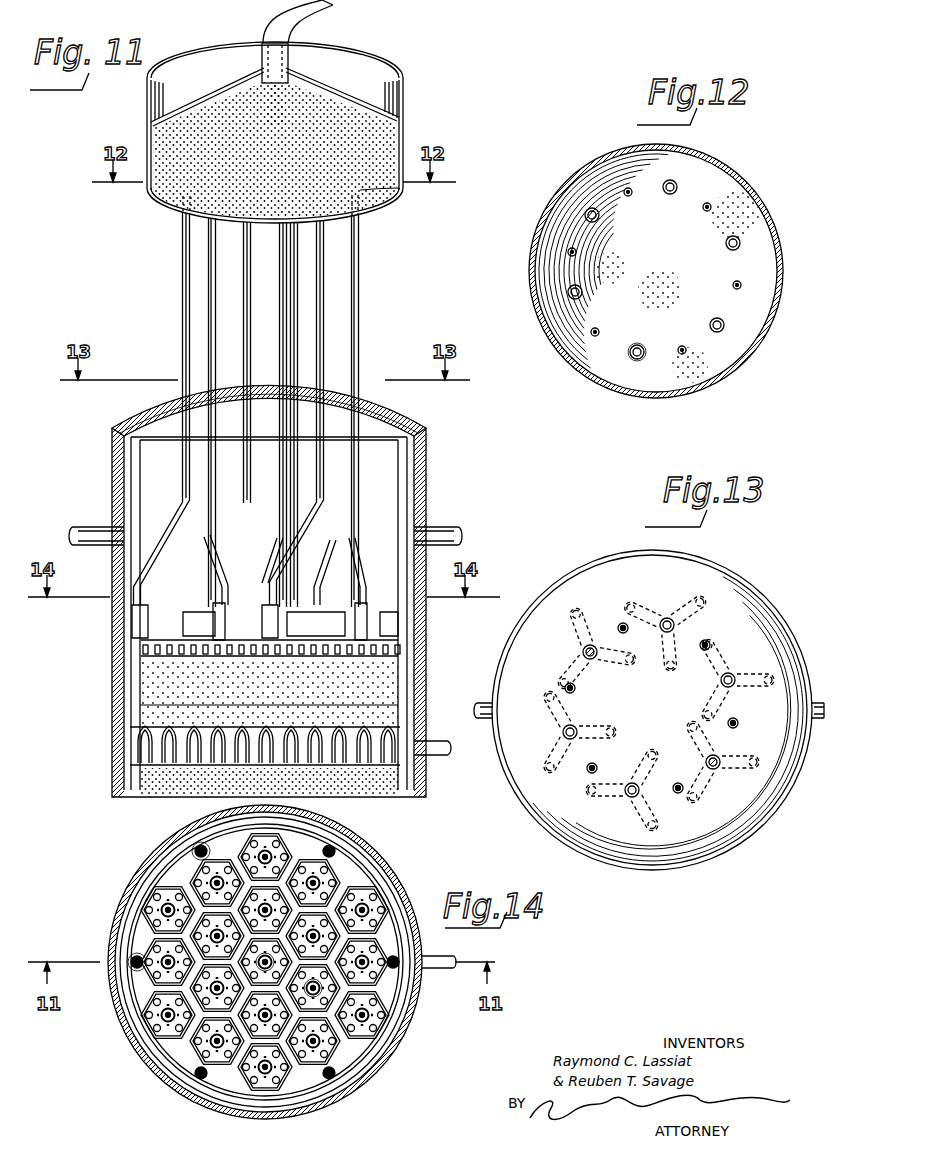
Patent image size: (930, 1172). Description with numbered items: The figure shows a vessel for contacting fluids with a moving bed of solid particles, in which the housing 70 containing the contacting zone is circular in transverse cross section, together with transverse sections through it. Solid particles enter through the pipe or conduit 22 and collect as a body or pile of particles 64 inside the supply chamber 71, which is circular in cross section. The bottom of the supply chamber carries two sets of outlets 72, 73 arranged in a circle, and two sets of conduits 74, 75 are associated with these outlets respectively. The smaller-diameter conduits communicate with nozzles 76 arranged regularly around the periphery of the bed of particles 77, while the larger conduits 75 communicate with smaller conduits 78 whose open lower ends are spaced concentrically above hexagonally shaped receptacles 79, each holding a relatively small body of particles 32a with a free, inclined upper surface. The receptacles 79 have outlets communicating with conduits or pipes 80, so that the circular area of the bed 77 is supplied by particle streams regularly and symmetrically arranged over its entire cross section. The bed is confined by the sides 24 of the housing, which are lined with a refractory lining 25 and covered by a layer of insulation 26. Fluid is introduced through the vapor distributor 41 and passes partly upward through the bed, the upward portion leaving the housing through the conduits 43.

In FIG. 11, the pipe or conduit 22 is at (300, 20).
In FIG. 11, the supply chamber 71 is at (405, 100).
In FIG. 12, the supply chamber 71 is at (680, 185).
In FIG. 11, the body or pile of particles 64 is at (374, 192).
In FIG. 11, the outlets 72 is at (229, 410).
In FIG. 12, the outlets 72 is at (630, 200).
In FIG. 11, the outlets 73 is at (160, 188).
In FIG. 12, the outlets 73 is at (680, 188).
In FIG. 11, the conduits 74 is at (183, 278).
In FIG. 12, the conduits 74 is at (628, 190).
In FIG. 13, the conduits 74 is at (624, 622).
In FIG. 14, the conduits 74 is at (201, 850).
In FIG. 11, the conduits 75 is at (216, 334).
In FIG. 12, the conduits 75 is at (637, 358).
In FIG. 13, the conduits 75 is at (670, 633).
In FIG. 11, the smaller conduits 78 is at (212, 562).
In FIG. 13, the smaller conduits 78 is at (688, 608).
In FIG. 14, the smaller conduits 78 is at (355, 878).
In FIG. 11, the relatively small bodies of particles 32a is at (330, 628).
In FIG. 11, the nozzles 76 is at (190, 628).
In FIG. 14, the nozzles 76 is at (148, 905).
In FIG. 11, the conduits or pipes 80 is at (204, 658).
In FIG. 14, the conduits or pipes 80 is at (350, 1020).
In FIG. 11, the hexagonally shaped receptacles 79 is at (190, 655).
In FIG. 14, the hexagonally shaped receptacles 79 is at (313, 880).
In FIG. 11, the vapor distributor 41 is at (337, 762).
In FIG. 11, the bed of particles 77 is at (160, 710).
In FIG. 14, the bed of particles 77 is at (240, 1100).
In FIG. 11, the housing 70 is at (110, 705).
In FIG. 13, the housing 70 is at (772, 585).
In FIG. 14, the housing 70 is at (110, 1004).
In FIG. 11, the layer of insulation 26 is at (428, 436).
In FIG. 14, the layer of insulation 26 is at (258, 1108).
In FIG. 11, the sides of housing 24 is at (425, 452).
In FIG. 14, the sides of housing 24 is at (325, 1105).
In FIG. 11, the refractory lining 25 is at (417, 474).
In FIG. 14, the refractory lining 25 is at (298, 1110).
In FIG. 11, the conduits 43 is at (100, 524).
In FIG. 13, the conduits 43 is at (483, 702).